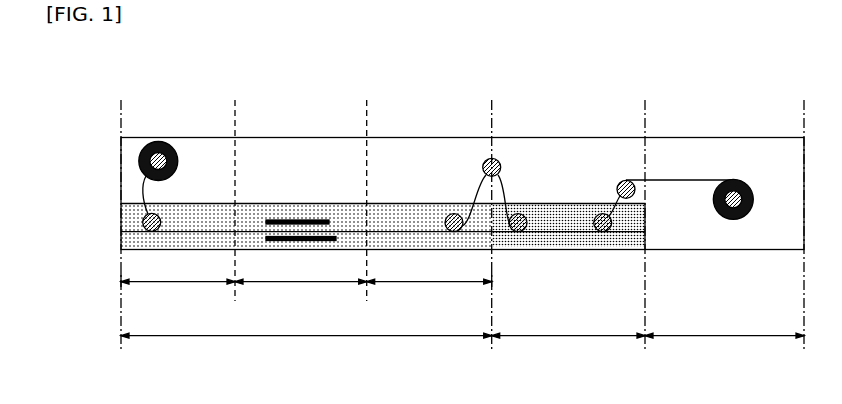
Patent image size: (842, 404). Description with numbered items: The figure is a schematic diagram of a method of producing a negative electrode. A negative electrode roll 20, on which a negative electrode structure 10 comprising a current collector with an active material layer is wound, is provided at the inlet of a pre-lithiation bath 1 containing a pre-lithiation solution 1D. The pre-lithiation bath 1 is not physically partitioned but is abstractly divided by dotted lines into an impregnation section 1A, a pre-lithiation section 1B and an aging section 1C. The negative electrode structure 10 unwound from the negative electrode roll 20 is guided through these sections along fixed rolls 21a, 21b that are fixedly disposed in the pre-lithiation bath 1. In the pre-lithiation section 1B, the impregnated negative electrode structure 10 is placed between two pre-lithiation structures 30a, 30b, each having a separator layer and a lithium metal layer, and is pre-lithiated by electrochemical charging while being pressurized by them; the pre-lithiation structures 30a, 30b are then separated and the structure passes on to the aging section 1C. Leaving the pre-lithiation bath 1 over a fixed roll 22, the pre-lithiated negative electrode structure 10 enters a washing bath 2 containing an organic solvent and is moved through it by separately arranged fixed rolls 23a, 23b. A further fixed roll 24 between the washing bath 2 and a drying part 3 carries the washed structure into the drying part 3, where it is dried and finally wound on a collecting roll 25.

The pre-lithiation bath 1 is at (306, 324).
The impregnation section 1A is at (178, 271).
The pre-lithiation section 1B is at (301, 271).
The aging section 1C is at (429, 271).
The pre-lithiation solution 1D is at (131, 237).
The washing bath 2 is at (568, 324).
The drying part 3 is at (724, 324).
The negative electrode structure 10 is at (138, 191).
The negative electrode roll 20 is at (155, 142).
The fixed roll 21a is at (143, 216).
The fixed roll 21b is at (450, 212).
The fixed roll 22 is at (488, 159).
The fixed roll 23a is at (518, 212).
The fixed roll 23b is at (605, 212).
The fixed roll 24 is at (623, 180).
The collecting roll 25 is at (734, 194).
The pre-lithiation structure 30a is at (272, 219).
The pre-lithiation structure 30b is at (308, 236).